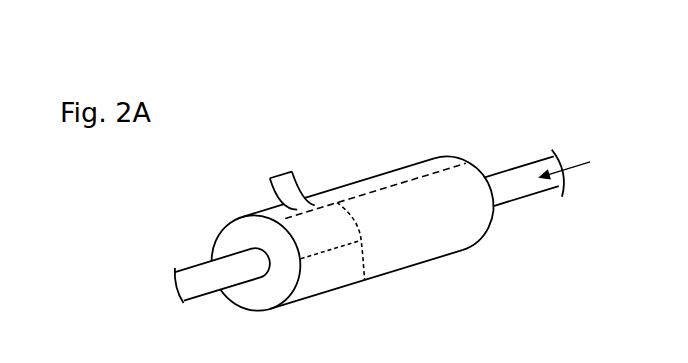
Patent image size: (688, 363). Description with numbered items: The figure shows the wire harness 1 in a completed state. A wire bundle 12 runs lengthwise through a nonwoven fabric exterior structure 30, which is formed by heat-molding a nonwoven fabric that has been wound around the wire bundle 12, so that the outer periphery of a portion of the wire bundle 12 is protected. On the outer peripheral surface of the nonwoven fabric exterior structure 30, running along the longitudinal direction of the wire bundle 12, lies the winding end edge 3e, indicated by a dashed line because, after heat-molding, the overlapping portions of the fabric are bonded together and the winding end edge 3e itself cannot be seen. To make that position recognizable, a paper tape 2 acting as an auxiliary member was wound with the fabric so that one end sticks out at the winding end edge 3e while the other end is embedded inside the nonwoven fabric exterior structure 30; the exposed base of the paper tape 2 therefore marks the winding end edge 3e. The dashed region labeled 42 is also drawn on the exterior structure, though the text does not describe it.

The wire harness 1 is at (287, 121).
The paper tape 2 is at (293, 171).
The winding end edge 3e is at (405, 182).
The wire bundle 12 is at (527, 166).
The nonwoven fabric exterior structure 30 is at (463, 251).
The groove 42 is at (365, 280).